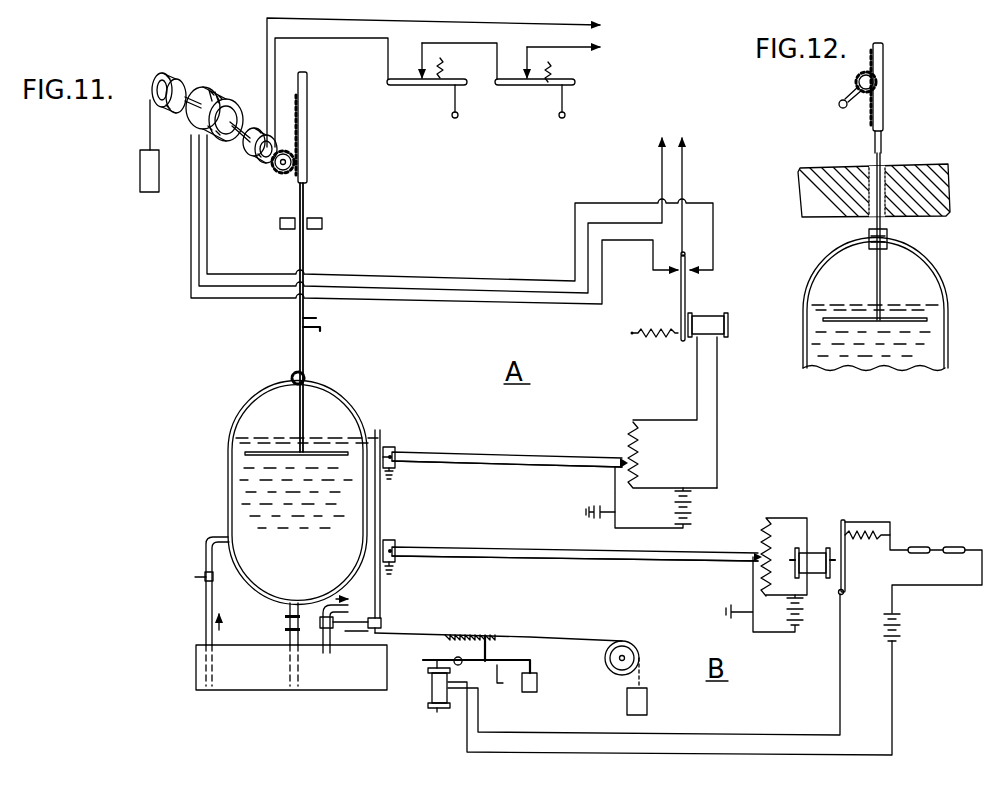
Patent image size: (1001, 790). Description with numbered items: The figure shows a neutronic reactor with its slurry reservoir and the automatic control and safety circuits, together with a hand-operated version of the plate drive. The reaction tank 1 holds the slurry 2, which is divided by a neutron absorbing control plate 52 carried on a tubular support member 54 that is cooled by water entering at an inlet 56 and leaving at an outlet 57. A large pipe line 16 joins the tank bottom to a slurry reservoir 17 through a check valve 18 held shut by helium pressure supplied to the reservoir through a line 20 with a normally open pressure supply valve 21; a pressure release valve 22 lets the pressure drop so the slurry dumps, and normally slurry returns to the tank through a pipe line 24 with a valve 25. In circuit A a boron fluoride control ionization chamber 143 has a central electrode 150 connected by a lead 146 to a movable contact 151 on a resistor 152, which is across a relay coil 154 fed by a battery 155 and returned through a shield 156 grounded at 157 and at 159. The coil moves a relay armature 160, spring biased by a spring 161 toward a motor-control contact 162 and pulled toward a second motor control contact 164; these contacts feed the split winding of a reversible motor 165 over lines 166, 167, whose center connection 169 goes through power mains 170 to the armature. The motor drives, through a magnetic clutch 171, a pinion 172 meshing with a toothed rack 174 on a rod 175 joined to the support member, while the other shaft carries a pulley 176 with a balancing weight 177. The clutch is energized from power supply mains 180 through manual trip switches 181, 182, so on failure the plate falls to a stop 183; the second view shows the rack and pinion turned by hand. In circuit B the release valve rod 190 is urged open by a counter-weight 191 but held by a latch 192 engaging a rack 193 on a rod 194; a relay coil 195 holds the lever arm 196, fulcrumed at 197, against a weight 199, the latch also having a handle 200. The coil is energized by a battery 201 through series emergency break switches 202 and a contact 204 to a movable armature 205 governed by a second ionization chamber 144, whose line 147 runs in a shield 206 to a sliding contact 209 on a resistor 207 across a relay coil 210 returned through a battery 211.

In FIG. 11, the reaction tank 1 is at (230, 436).
In FIG. 12, the reaction tank 1 is at (946, 281).
In FIG. 11, the slurry 2 is at (233, 494).
In FIG. 12, the slurry 2 is at (936, 352).
In FIG. 11, the pipe line 16 is at (289, 617).
In FIG. 11, the slurry reservoir 17 is at (196, 670).
In FIG. 11, the check valve 18 is at (285, 630).
In FIG. 11, the line 20 is at (382, 598).
In FIG. 11, the pressure supply valve 21 is at (383, 618).
In FIG. 11, the pressure release valve 22 is at (323, 648).
In FIG. 11, the pipe line 24 is at (205, 601).
In FIG. 11, the valve 25 is at (195, 577).
In FIG. 11, the control plate 52 is at (249, 456).
In FIG. 12, the control plate 52 is at (928, 322).
In FIG. 11, the tubular support member 54 is at (299, 353).
In FIG. 12, the tubular support member 54 is at (881, 273).
In FIG. 11, the inlet 56 is at (318, 319).
In FIG. 11, the outlet 57 is at (322, 333).
In FIG. 11, the control ionization chamber 143 is at (398, 446).
In FIG. 11, the second ionization chamber 144 is at (398, 540).
In FIG. 11, the lead 146 is at (490, 446).
In FIG. 11, the shielded line 147 is at (484, 550).
In FIG. 11, the central electrode 150 is at (390, 446).
In FIG. 11, the movable contact 151 is at (622, 460).
In FIG. 11, the resistor 152 is at (640, 442).
In FIG. 11, the relay coil 154 is at (710, 341).
In FIG. 11, the battery 155 is at (692, 508).
In FIG. 11, the shield 156 is at (510, 467).
In FIG. 11, the ground 157 is at (394, 478).
In FIG. 11, the ground 159 is at (594, 513).
In FIG. 11, the relay armature 160 is at (688, 304).
In FIG. 11, the spring 161 is at (655, 339).
In FIG. 11, the motor-control contact 162 is at (676, 276).
In FIG. 11, the second motor control contact 164 is at (692, 278).
In FIG. 11, the reversible motor 165 is at (222, 95).
In FIG. 11, the line 166 is at (252, 150).
In FIG. 11, the line 167 is at (192, 96).
In FIG. 11, the center connection 169 is at (403, 286).
In FIG. 11, the power mains 170 is at (677, 134).
In FIG. 11, the magnetic clutch 171 is at (257, 162).
In FIG. 11, the pinion 172 is at (275, 171).
In FIG. 12, the pinion 172 is at (857, 80).
In FIG. 11, the toothed rack 174 is at (308, 151).
In FIG. 12, the toothed rack 174 is at (884, 111).
In FIG. 11, the rod 175 is at (304, 258).
In FIG. 11, the pulley 176 is at (164, 72).
In FIG. 11, the weight 177 is at (140, 163).
In FIG. 11, the power supply mains 180 is at (606, 30).
In FIG. 11, the manual trip switch 181 is at (420, 86).
In FIG. 11, the manual trip switch 182 is at (530, 86).
In FIG. 11, the stop 183 is at (322, 223).
In FIG. 12, the stop 183 is at (846, 108).
In FIG. 11, the release valve rod 190 is at (340, 636).
In FIG. 11, the counter-weight 191 is at (647, 702).
In FIG. 11, the latch 192 is at (490, 655).
In FIG. 11, the rack 193 is at (470, 634).
In FIG. 11, the rod 194 is at (400, 632).
In FIG. 11, the relay coil 195 is at (431, 690).
In FIG. 11, the lever arm 196 is at (440, 660).
In FIG. 11, the fulcrum 197 is at (461, 663).
In FIG. 11, the weight 199 is at (538, 686).
In FIG. 11, the handle 200 is at (500, 686).
In FIG. 11, the battery 201 is at (901, 628).
In FIG. 11, the series emergency break switches 202 is at (955, 547).
In FIG. 11, the contact 204 is at (850, 519).
In FIG. 11, the movable armature 205 is at (842, 540).
In FIG. 11, the shield 206 is at (545, 564).
In FIG. 11, the resistor 207 is at (780, 541).
In FIG. 11, the sliding contact 209 is at (760, 555).
In FIG. 11, the relay coil 210 is at (828, 579).
In FIG. 11, the battery 211 is at (812, 628).